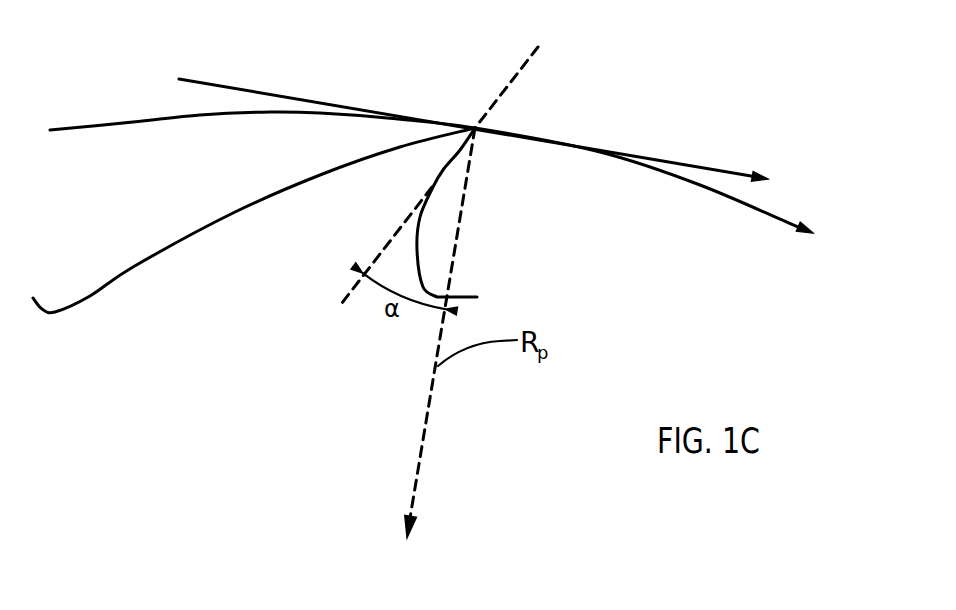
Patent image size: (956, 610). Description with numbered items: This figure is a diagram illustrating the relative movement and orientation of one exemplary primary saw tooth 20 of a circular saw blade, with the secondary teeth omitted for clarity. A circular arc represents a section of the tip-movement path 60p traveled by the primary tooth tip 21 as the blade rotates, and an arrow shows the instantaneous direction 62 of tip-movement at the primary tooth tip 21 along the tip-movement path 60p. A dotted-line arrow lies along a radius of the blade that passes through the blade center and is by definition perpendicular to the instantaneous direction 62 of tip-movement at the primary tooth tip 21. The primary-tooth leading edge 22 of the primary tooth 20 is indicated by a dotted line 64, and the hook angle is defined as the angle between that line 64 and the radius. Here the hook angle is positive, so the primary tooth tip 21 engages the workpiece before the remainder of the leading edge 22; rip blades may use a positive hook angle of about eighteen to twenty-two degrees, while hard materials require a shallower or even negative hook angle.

The primary saw tooth 20 is at (253, 245).
The primary tooth tip 21 is at (458, 108).
The primary-tooth leading edge 22 is at (455, 152).
The instantaneous direction of tip-movement 62 is at (647, 157).
The tip-movement path 60p is at (755, 212).
The dotted line 64 is at (520, 73).